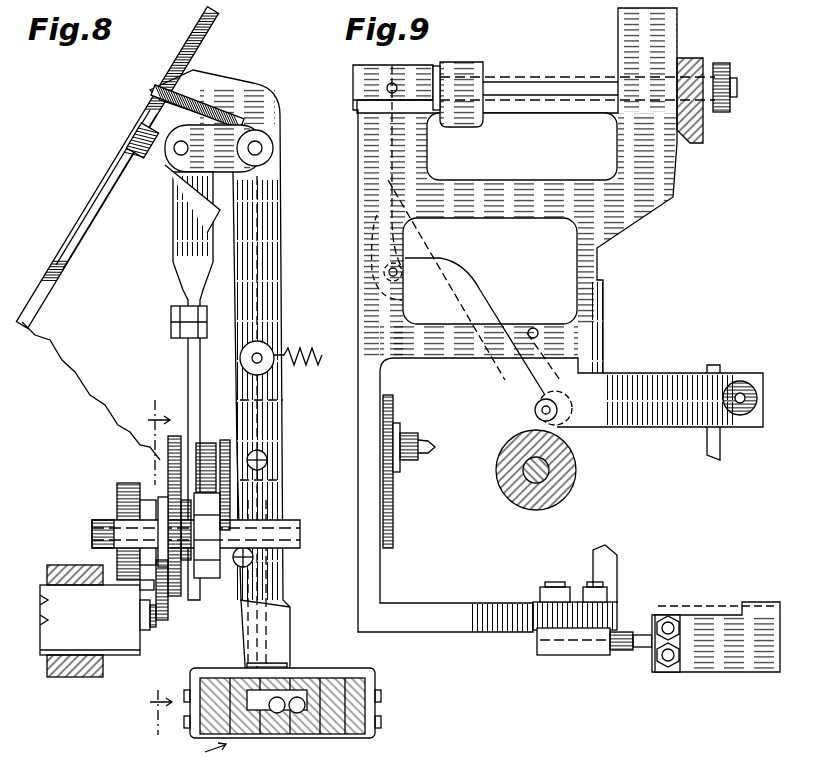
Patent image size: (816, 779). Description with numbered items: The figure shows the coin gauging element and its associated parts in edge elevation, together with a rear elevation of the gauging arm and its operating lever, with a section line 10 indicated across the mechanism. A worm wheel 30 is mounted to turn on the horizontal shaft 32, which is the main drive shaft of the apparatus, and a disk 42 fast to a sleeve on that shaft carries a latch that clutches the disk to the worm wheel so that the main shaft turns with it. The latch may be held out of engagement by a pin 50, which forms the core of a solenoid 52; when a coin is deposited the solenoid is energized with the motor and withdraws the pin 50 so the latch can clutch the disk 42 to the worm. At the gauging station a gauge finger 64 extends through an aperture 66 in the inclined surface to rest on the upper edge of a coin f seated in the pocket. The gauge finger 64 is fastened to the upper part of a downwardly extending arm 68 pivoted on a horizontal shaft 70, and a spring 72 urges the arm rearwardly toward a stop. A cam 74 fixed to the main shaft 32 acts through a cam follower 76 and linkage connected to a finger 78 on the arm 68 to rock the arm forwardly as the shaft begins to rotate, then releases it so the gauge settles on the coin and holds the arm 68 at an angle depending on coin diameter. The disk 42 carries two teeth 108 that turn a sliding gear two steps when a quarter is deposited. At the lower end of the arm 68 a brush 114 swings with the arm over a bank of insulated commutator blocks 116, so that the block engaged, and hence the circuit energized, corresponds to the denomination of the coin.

In FIG. 8, the coin f is at (138, 120).
In FIG. 8, the section line 10 is at (149, 567).
In FIG. 8, the worm wheel 30 is at (117, 487).
In FIG. 8, the horizontal shaft 32 is at (285, 520).
In FIG. 9, the horizontal shaft 32 is at (550, 474).
In FIG. 8, the disk 42 is at (168, 462).
In FIG. 8, the pin 50 is at (157, 632).
In FIG. 8, the solenoid 52 is at (100, 634).
In FIG. 8, the gauge finger 64 is at (158, 90).
In FIG. 8, the aperture 66 is at (130, 134).
In FIG. 8, the arm 68 is at (270, 228).
In FIG. 9, the arm 68 is at (660, 282).
In FIG. 8, the horizontal shaft 70 is at (262, 148).
In FIG. 9, the horizontal shaft 70 is at (531, 88).
In FIG. 8, the spring 72 is at (312, 352).
In FIG. 8, the cam 74 is at (200, 580).
In FIG. 8, the cam follower 76 is at (206, 442).
In FIG. 8, the finger 78 is at (178, 170).
In FIG. 8, the teeth 108 is at (282, 723).
In FIG. 8, the brush 114 is at (285, 700).
In FIG. 9, the brush 114 is at (636, 650).
In FIG. 8, the commutator blocks 116 is at (195, 761).